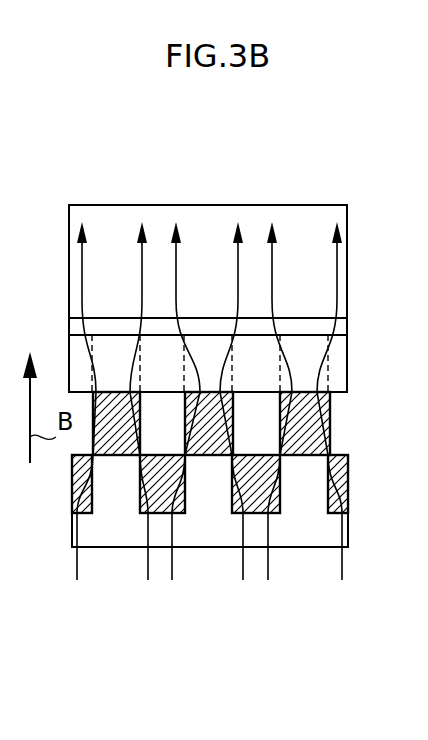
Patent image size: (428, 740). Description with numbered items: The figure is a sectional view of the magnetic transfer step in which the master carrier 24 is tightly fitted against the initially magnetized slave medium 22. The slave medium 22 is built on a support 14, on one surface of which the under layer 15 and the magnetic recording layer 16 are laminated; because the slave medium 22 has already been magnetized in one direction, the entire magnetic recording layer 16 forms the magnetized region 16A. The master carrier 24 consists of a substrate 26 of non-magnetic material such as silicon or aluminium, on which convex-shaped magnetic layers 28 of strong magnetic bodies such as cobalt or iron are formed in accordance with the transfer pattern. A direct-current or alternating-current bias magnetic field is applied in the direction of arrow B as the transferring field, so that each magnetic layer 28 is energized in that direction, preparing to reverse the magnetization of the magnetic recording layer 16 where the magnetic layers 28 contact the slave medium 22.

The slave medium 22 is at (366, 232).
The support 14 is at (348, 318).
The under layer 15 is at (76, 322).
The magnetic recording layer 16 is at (58, 351).
The magnetized region 16A is at (347, 368).
The magnetic layers 28 is at (330, 428).
The master carrier 24 is at (56, 502).
The substrate 26 is at (330, 527).